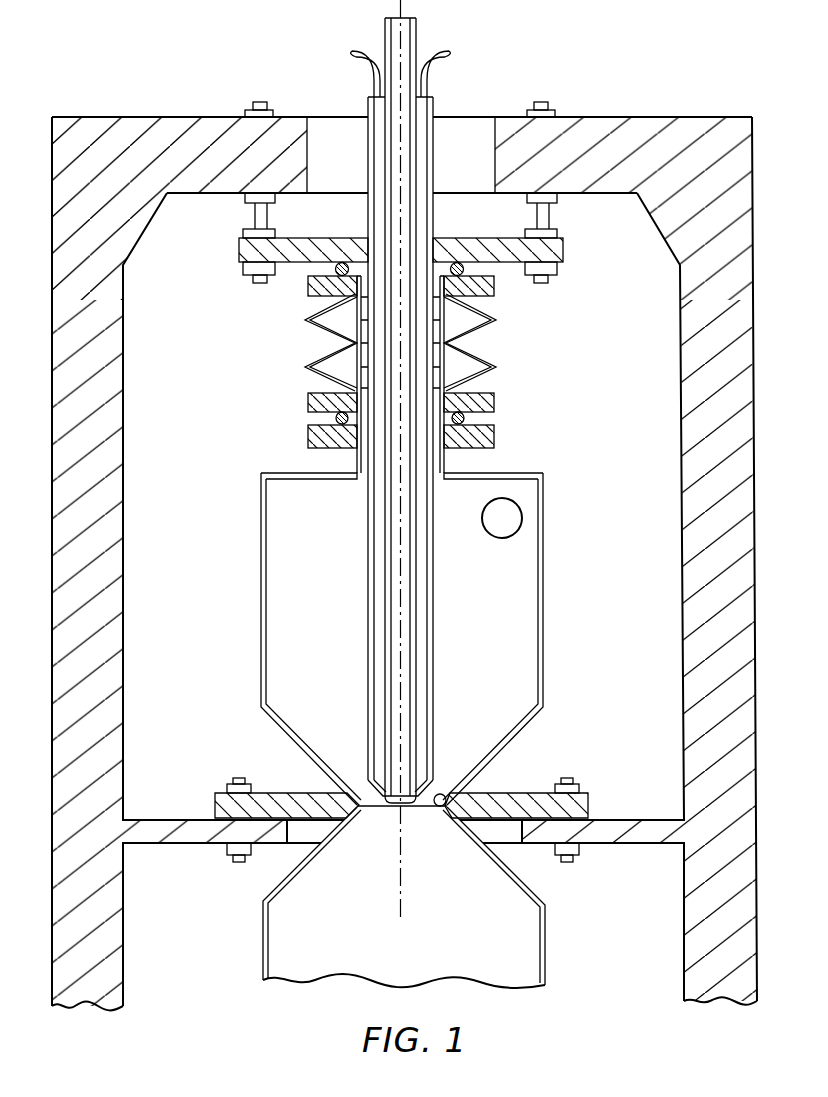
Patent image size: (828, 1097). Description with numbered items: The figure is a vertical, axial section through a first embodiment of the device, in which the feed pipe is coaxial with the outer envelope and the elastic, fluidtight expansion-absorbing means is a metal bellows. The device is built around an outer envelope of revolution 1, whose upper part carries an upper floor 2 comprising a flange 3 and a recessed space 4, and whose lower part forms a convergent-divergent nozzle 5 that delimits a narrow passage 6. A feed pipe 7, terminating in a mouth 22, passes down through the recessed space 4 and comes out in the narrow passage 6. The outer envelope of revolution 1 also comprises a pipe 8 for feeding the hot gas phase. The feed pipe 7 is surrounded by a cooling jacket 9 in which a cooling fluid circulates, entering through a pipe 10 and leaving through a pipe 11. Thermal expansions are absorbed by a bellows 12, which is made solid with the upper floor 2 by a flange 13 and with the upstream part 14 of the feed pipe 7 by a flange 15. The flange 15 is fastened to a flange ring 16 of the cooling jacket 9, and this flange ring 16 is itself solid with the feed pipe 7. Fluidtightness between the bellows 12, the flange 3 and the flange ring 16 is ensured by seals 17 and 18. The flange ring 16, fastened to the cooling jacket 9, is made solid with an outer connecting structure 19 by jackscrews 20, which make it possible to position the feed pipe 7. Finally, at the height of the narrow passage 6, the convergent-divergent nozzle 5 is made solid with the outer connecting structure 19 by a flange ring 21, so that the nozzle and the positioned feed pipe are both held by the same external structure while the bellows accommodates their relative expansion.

The outer envelope of revolution 1 is at (543, 611).
The upper floor 2 is at (530, 471).
The flange 3 is at (310, 433).
The recessed space 4 is at (365, 455).
The convergent-divergent nozzle 5 is at (468, 833).
The narrow passage 6 is at (376, 800).
The feed pipe 7 is at (400, 592).
The pipe 8 is at (515, 518).
The cooling jacket 9 is at (380, 676).
The pipe 10 is at (446, 52).
The pipe 11 is at (355, 53).
The bellows 12 is at (330, 336).
The flange 13 is at (312, 404).
The upstream part 14 is at (405, 220).
The flange 15 is at (312, 288).
The flange ring 16 is at (535, 248).
The seal 17 is at (464, 417).
The seal 18 is at (460, 294).
The outer connecting structure 19 is at (404, 564).
The jackscrews 20 is at (253, 214).
The flange ring 21 is at (530, 791).
The mouth 22 is at (441, 794).